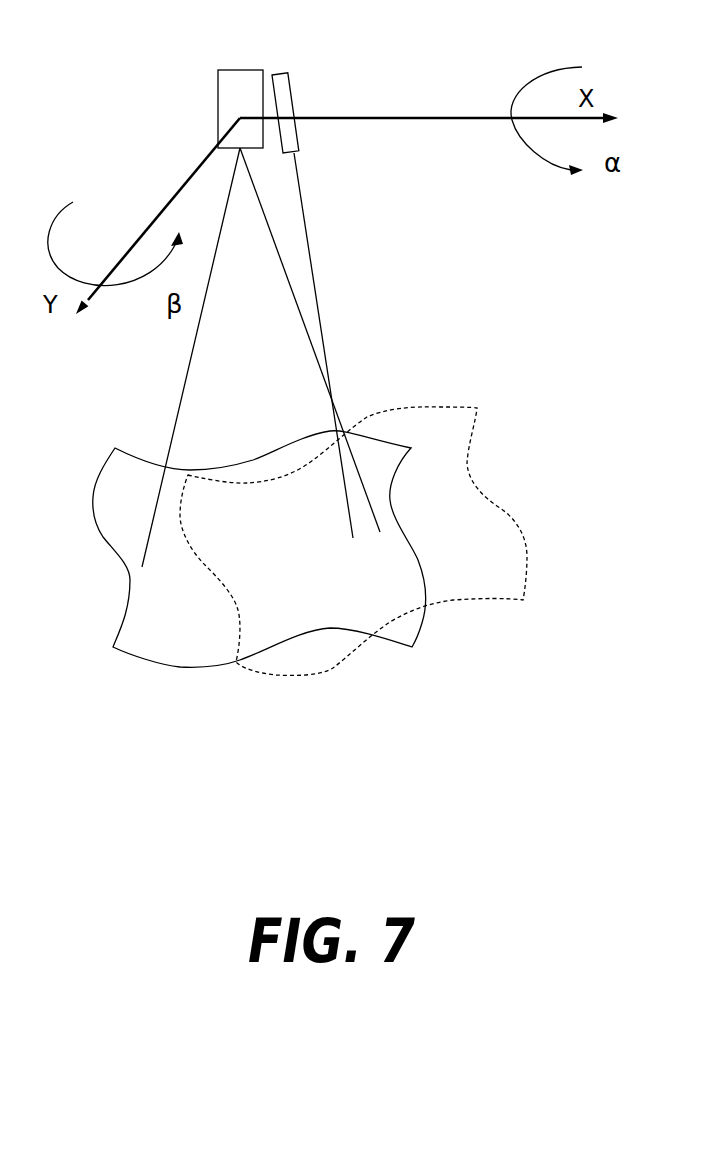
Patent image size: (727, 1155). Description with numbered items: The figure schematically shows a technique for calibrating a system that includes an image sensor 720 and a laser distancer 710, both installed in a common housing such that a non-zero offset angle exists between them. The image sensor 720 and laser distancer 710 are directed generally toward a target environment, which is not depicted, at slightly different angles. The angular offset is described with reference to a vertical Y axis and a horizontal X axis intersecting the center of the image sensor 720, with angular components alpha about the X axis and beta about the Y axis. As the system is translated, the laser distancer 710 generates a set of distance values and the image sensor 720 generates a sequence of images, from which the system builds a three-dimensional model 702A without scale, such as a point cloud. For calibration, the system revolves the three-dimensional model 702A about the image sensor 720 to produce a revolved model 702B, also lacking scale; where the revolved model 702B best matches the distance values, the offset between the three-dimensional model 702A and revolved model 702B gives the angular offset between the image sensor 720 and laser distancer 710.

The image sensor 720 is at (218, 88).
The laser distancer 710 is at (290, 85).
The three-dimensional model 702A is at (158, 608).
The revolved model 702B is at (493, 583).